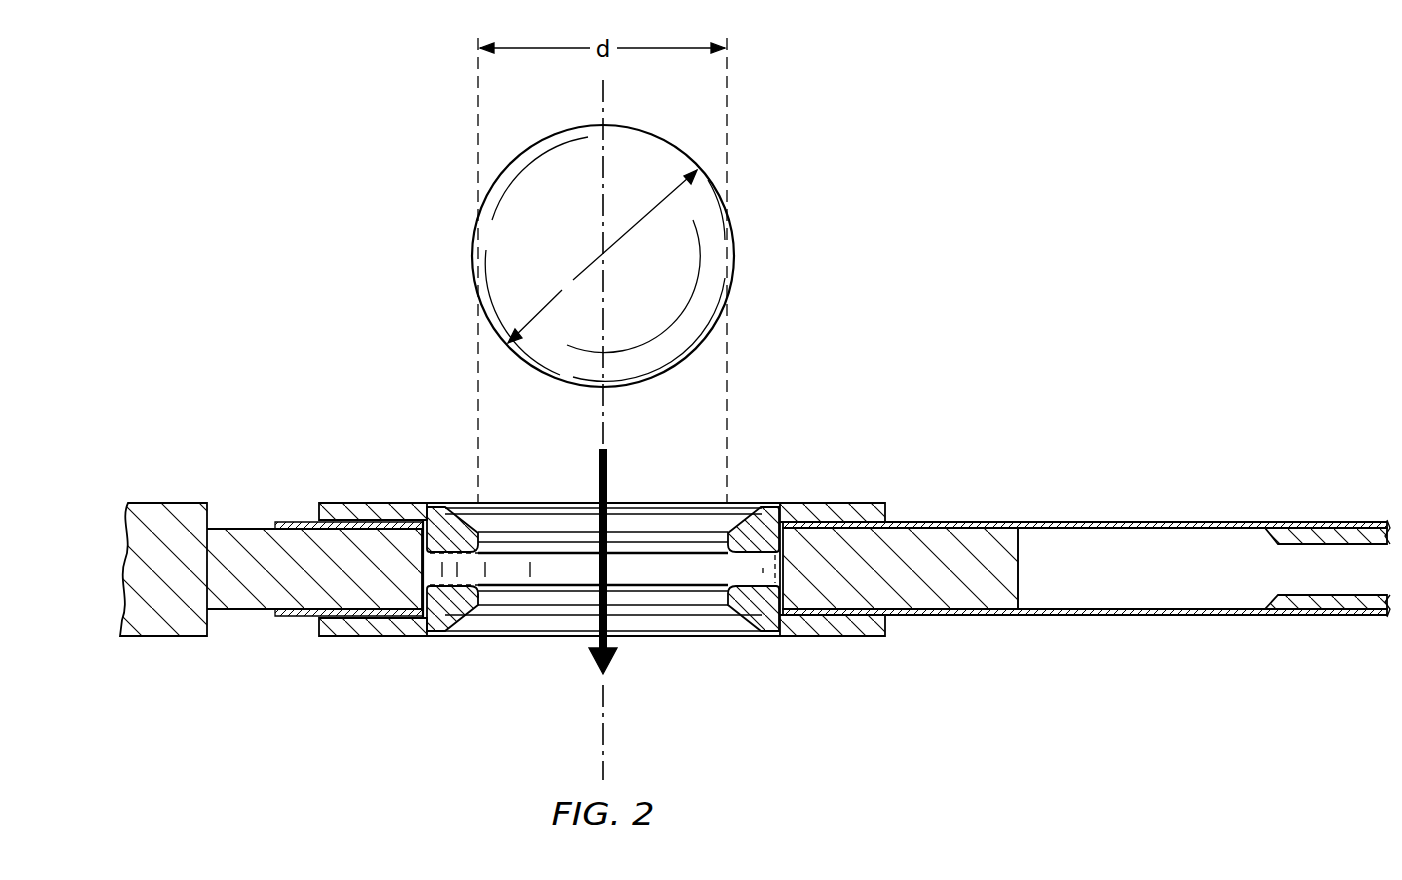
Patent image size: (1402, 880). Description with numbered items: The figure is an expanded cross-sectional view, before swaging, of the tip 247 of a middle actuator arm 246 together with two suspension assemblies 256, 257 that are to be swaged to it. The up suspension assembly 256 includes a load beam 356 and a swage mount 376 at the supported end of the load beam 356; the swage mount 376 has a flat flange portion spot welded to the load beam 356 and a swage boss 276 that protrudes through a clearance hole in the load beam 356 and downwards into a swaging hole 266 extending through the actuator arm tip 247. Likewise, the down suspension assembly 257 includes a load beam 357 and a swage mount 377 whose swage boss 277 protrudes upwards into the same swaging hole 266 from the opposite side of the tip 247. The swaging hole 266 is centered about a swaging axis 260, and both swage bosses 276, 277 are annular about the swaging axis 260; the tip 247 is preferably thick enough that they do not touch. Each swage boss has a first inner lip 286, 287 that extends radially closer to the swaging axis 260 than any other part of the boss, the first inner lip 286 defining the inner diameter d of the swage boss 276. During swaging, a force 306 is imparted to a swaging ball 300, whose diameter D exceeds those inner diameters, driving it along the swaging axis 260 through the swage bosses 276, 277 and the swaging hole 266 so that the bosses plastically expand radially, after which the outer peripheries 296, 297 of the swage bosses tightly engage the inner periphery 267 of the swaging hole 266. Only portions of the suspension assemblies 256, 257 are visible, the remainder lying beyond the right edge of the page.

The actuator arm 246 is at (172, 523).
The tip of the actuator arm 247 is at (235, 552).
The suspension assembly 256 is at (1129, 523).
The suspension assembly 257 is at (1159, 609).
The swaging axis 260 is at (601, 99).
The swaging hole 266 is at (677, 572).
The inner periphery of the swaging hole 267 is at (414, 565).
The swage boss 276 is at (740, 534).
The swage boss 277 is at (750, 594).
The first inner lip 286 is at (658, 541).
The first inner lip 287 is at (482, 596).
The outer periphery of the swage boss 296 is at (412, 518).
The outer periphery of the swage boss 297 is at (411, 620).
The swaging ball 300 is at (529, 221).
The force 306 is at (598, 474).
The load beam 356 is at (1336, 527).
The load beam 357 is at (1339, 616).
The swage mount 376 is at (850, 508).
The swage mount 377 is at (855, 632).